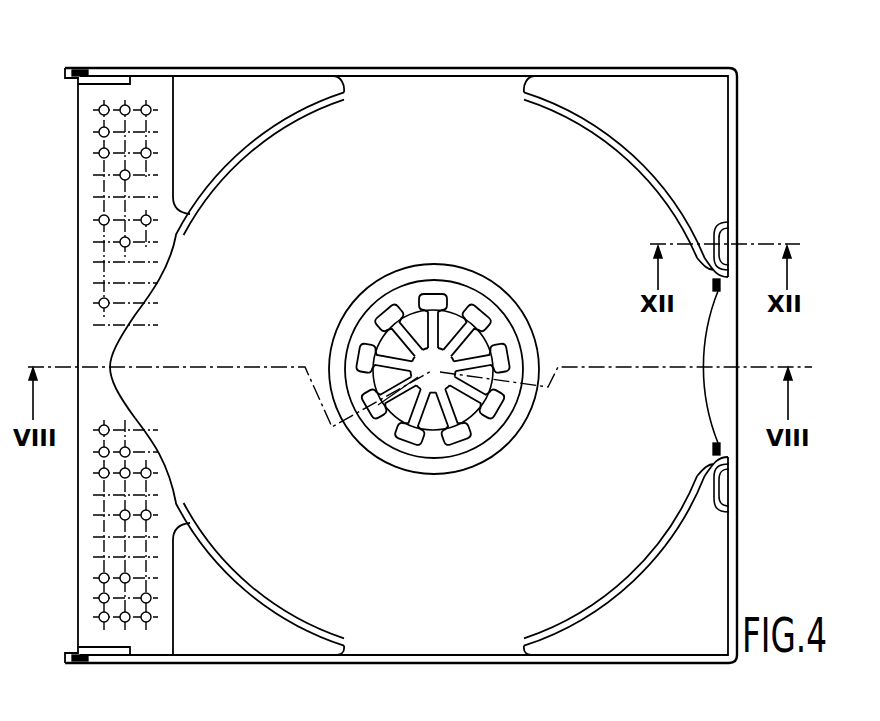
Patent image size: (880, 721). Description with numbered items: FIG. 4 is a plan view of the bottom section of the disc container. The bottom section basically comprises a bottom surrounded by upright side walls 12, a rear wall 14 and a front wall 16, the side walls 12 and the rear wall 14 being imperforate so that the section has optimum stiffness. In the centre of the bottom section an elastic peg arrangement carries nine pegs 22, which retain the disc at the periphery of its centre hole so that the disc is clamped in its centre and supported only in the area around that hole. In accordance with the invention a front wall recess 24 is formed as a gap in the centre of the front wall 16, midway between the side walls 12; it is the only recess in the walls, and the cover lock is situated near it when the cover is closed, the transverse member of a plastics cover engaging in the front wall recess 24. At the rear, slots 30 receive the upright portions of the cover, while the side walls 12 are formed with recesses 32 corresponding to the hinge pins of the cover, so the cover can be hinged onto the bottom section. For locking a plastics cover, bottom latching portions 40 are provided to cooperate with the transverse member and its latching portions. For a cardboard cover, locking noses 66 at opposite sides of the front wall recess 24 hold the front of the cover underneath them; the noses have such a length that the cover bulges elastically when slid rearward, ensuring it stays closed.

The side walls 12 is at (455, 70).
The rear wall 14 is at (100, 237).
The front wall 16 is at (736, 182).
The pegs 22 is at (520, 370).
The front wall recess 24 is at (713, 350).
The slots 30 is at (108, 78).
The recesses 32 is at (76, 81).
The bottom latching portions 40 is at (721, 290).
The locking noses 66 is at (712, 232).